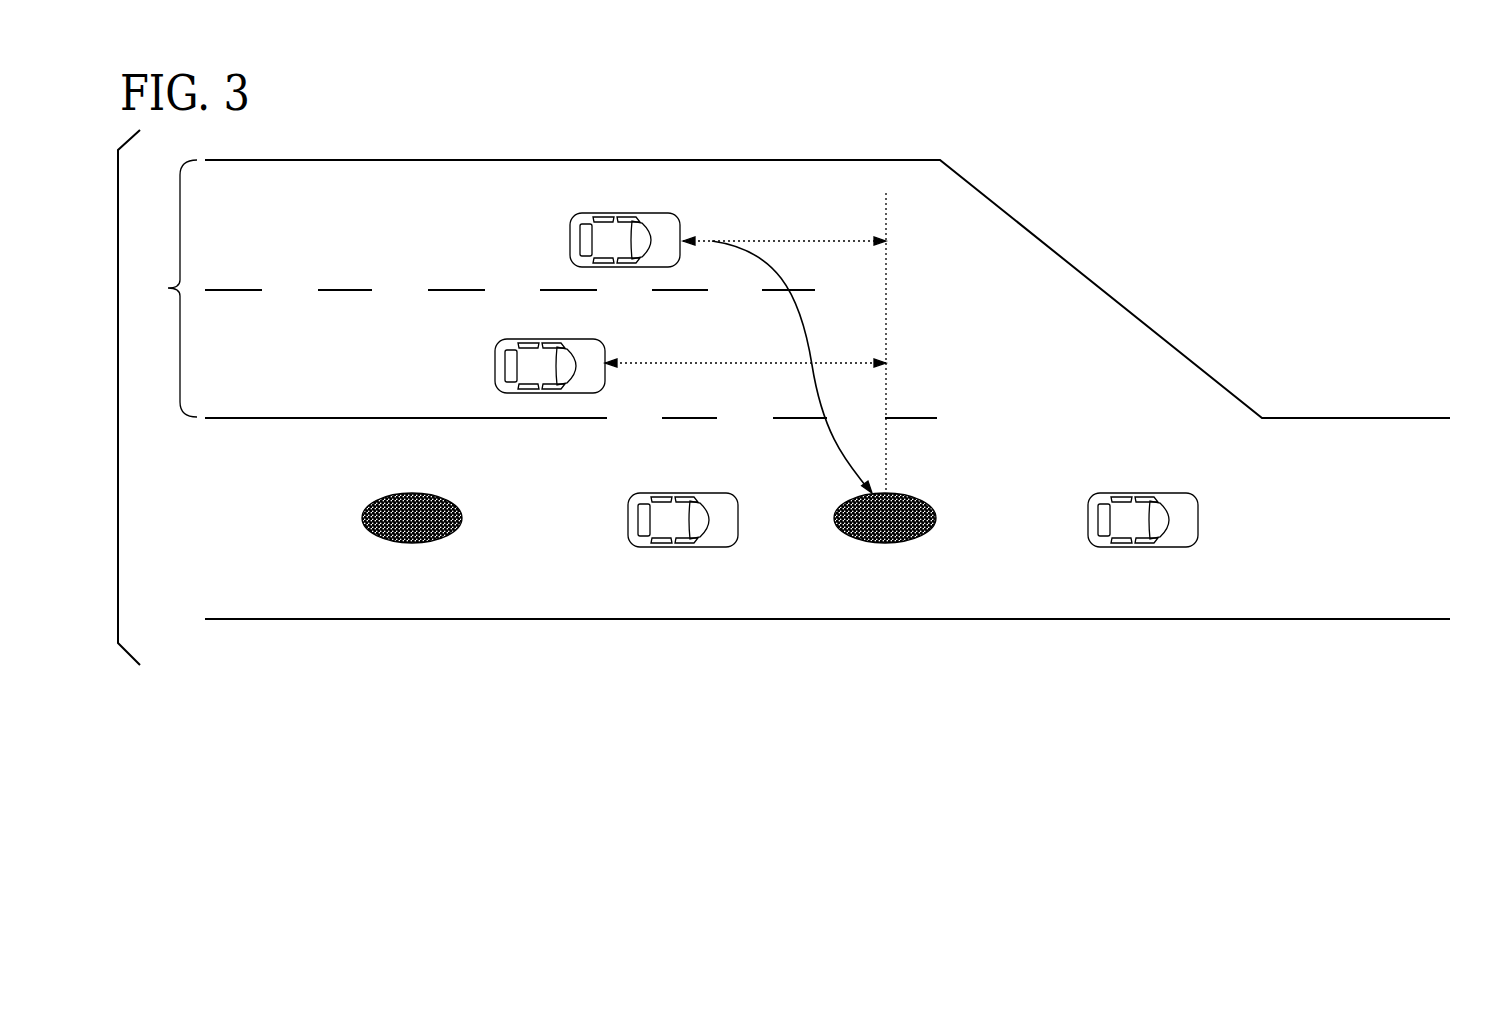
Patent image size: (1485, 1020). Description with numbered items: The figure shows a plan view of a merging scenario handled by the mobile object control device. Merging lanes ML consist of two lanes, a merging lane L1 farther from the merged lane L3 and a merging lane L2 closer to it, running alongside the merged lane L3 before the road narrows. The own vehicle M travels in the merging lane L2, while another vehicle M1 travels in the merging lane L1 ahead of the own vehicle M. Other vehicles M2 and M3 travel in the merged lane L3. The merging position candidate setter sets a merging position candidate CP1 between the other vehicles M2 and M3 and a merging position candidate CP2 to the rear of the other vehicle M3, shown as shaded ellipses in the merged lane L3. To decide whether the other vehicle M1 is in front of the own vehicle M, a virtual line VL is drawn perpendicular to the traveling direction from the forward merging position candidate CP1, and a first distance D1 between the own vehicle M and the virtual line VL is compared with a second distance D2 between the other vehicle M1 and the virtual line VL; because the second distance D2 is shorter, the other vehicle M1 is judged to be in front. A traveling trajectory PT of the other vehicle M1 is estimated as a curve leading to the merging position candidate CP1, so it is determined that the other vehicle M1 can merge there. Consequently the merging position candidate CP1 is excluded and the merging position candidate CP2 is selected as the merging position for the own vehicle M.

The merging lanes ML is at (160, 305).
The merging lane L1 is at (236, 240).
The merging lane L2 is at (237, 368).
The merged lane L3 is at (237, 535).
The own vehicle M is at (495, 362).
The other vehicle M1 is at (567, 238).
The other vehicle M2 is at (1143, 548).
The other vehicle M3 is at (683, 548).
The merging position candidate CP1 is at (885, 545).
The merging position candidate CP2 is at (412, 545).
The virtual line VL is at (889, 288).
The traveling trajectory PT is at (808, 322).
The first distance D1 is at (745, 348).
The second distance D2 is at (784, 224).